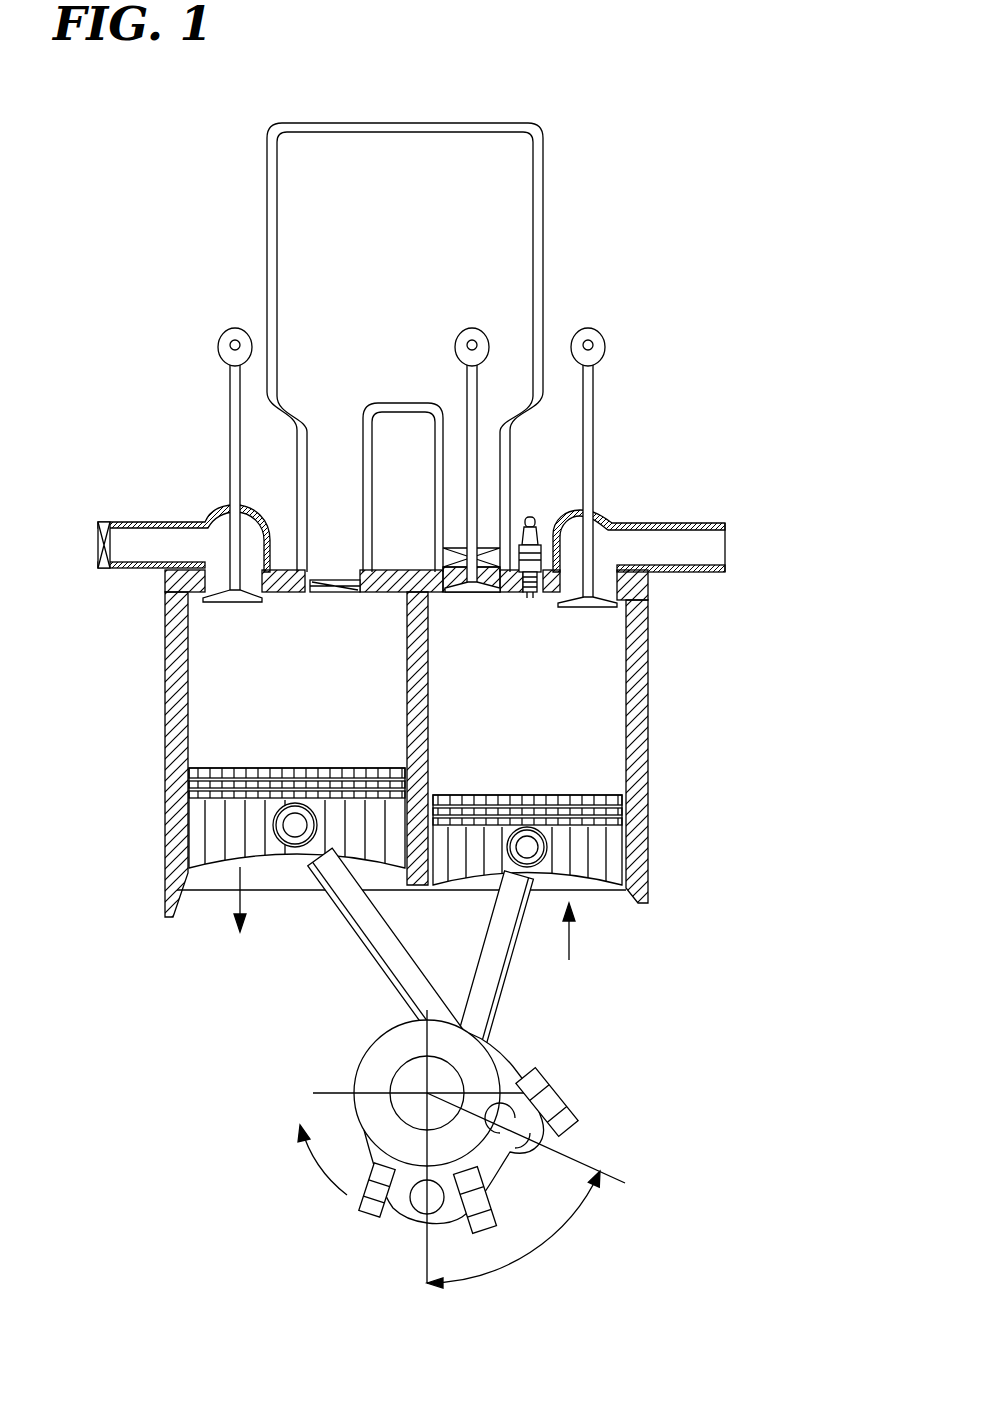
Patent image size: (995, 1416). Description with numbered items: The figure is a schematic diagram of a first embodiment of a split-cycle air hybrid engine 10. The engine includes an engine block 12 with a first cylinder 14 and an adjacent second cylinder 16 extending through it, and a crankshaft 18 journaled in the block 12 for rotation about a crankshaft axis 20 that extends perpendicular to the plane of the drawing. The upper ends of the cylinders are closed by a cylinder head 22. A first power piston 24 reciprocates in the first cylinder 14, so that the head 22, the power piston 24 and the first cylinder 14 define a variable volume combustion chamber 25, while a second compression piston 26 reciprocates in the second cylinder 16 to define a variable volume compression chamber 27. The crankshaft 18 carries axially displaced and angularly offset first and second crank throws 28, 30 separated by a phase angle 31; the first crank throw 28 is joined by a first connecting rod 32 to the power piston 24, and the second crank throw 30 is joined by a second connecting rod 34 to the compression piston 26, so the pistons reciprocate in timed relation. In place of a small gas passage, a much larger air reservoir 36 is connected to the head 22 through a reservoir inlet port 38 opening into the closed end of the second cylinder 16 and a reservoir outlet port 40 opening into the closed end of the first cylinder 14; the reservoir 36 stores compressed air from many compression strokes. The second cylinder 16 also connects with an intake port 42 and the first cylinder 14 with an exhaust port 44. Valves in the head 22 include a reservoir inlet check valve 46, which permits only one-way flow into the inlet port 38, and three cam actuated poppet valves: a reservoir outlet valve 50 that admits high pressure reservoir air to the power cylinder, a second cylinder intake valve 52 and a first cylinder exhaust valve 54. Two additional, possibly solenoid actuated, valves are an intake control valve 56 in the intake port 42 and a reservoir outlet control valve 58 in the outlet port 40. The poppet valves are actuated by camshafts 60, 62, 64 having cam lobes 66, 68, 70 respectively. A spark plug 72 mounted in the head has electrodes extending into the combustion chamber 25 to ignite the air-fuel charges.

The split-cycle air hybrid engine 10 is at (660, 230).
The engine block 12 is at (419, 754).
The first cylinder 14 is at (625, 676).
The second cylinder 16 is at (182, 670).
The crankshaft 18 is at (468, 1135).
The crankshaft axis 20 is at (427, 1093).
The cylinder head 22 is at (361, 545).
The first power piston 24 is at (610, 893).
The combustion chamber 25 is at (585, 765).
The second compression piston 26 is at (215, 858).
The compression chamber 27 is at (215, 733).
The first crank throw 28 is at (420, 1205).
The second crank throw 30 is at (537, 1135).
The phase angle 31 is at (538, 1257).
The first connecting rod 32 is at (500, 997).
The second connecting rod 34 is at (352, 934).
The air reservoir 36 is at (544, 178).
The reservoir inlet port 38 is at (335, 583).
The reservoir outlet port 40 is at (488, 592).
The intake port 42 is at (144, 510).
The exhaust port 44 is at (706, 539).
The reservoir inlet check valve 46 is at (333, 594).
The reservoir outlet valve 50 is at (466, 392).
The second cylinder intake valve 52 is at (228, 420).
The first cylinder exhaust valve 54 is at (596, 410).
The intake control valve 56 is at (98, 546).
The reservoir outlet control valve 58 is at (482, 556).
The camshaft 60 is at (194, 436).
The camshaft 62 is at (492, 443).
The camshaft 64 is at (627, 439).
The cam lobe 66 is at (219, 345).
The cam lobe 68 is at (458, 350).
The cam lobe 70 is at (606, 346).
The spark plug 72 is at (541, 520).